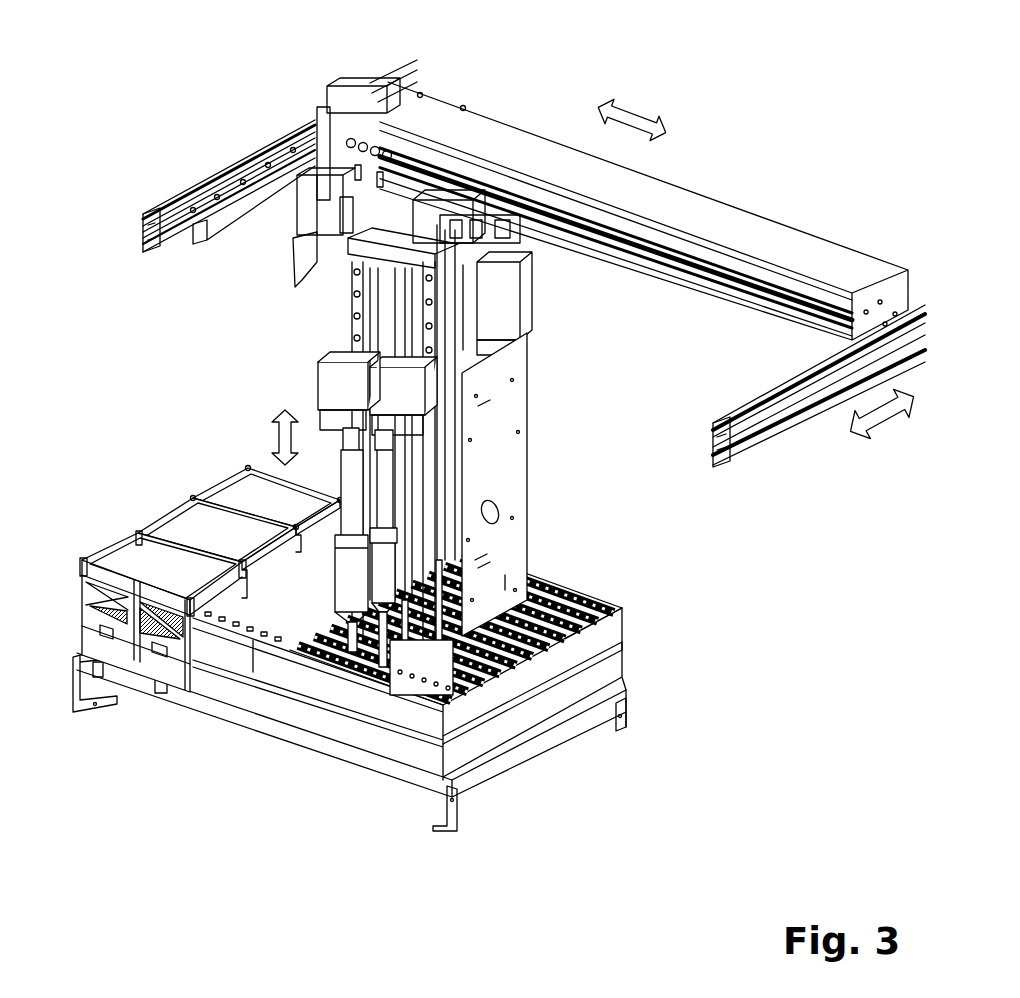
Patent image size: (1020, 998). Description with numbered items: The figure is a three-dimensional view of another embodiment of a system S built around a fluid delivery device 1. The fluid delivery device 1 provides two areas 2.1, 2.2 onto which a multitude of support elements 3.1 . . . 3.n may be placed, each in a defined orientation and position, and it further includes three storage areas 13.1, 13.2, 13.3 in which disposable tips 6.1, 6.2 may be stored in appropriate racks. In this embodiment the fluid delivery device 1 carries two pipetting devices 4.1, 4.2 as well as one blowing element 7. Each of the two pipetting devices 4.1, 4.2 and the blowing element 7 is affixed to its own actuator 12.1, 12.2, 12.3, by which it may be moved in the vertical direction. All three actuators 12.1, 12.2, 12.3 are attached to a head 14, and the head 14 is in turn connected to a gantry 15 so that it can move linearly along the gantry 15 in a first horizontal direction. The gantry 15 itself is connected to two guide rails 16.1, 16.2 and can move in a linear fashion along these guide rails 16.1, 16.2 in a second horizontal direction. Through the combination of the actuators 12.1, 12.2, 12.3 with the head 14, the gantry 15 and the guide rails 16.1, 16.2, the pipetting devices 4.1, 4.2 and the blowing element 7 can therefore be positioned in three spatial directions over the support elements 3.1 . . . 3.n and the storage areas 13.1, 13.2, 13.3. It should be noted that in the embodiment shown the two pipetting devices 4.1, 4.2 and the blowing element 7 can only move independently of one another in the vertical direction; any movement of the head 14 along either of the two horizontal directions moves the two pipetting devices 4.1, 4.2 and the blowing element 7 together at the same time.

The system S is at (151, 103).
The fluid delivery device 1 is at (748, 589).
The area 2.1 is at (463, 773).
The area 2.2 is at (226, 717).
The support element 3.1 is at (453, 668).
The support element 3.n is at (607, 603).
The pipetting device 4.1 is at (335, 612).
The pipetting device 4.2 is at (373, 612).
The disposable tip 6.1 is at (352, 652).
The disposable tip 6.2 is at (384, 668).
The blowing element 7 is at (497, 683).
The actuator 12.1 is at (325, 380).
The actuator 12.2 is at (327, 398).
The actuator 12.3 is at (462, 523).
The storage area 13.1 is at (83, 583).
The storage area 13.2 is at (180, 530).
The storage area 13.3 is at (240, 492).
The head 14 is at (348, 305).
The gantry 15 is at (655, 193).
The guide rail 16.1 is at (150, 226).
The guide rail 16.2 is at (753, 447).